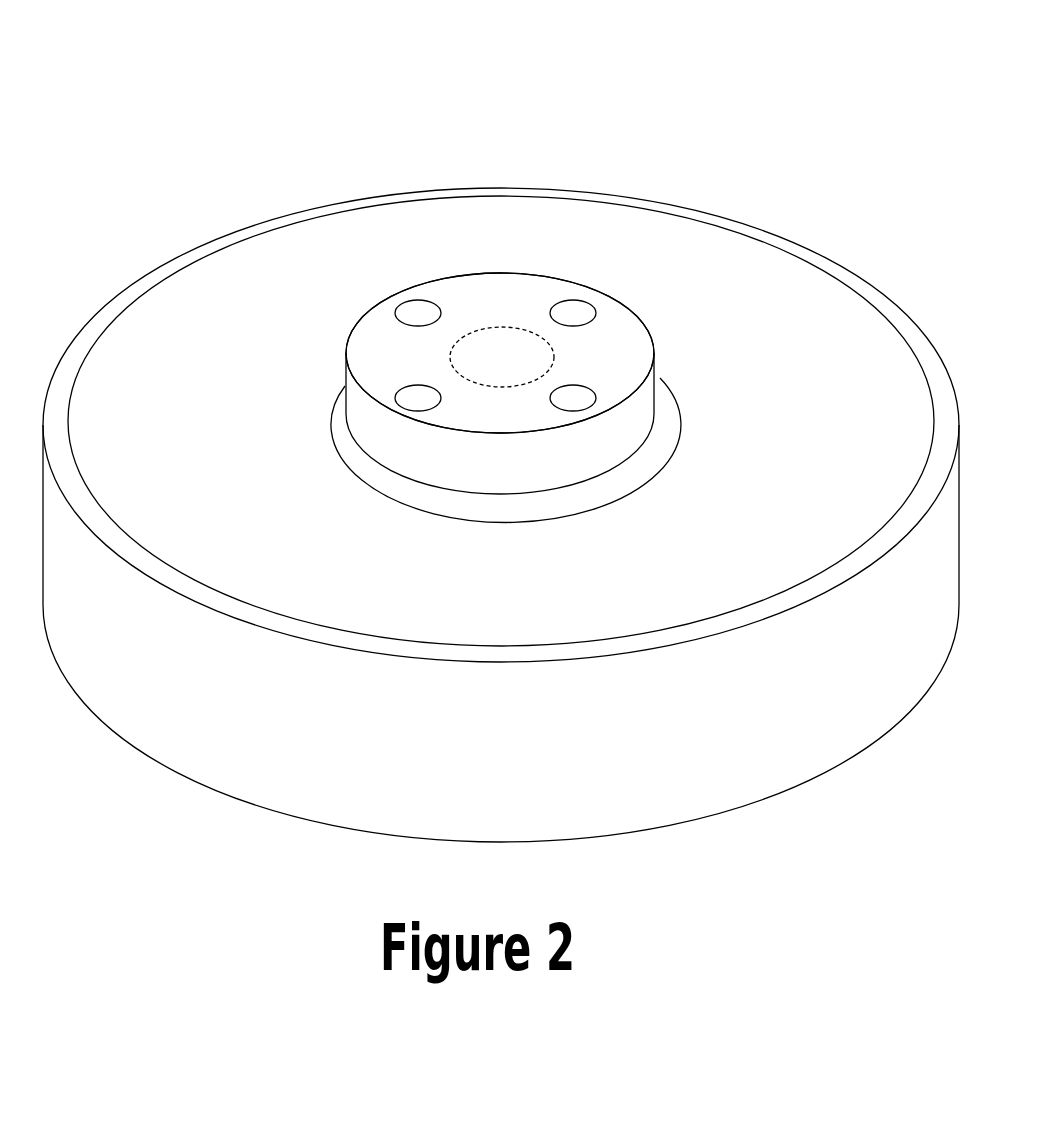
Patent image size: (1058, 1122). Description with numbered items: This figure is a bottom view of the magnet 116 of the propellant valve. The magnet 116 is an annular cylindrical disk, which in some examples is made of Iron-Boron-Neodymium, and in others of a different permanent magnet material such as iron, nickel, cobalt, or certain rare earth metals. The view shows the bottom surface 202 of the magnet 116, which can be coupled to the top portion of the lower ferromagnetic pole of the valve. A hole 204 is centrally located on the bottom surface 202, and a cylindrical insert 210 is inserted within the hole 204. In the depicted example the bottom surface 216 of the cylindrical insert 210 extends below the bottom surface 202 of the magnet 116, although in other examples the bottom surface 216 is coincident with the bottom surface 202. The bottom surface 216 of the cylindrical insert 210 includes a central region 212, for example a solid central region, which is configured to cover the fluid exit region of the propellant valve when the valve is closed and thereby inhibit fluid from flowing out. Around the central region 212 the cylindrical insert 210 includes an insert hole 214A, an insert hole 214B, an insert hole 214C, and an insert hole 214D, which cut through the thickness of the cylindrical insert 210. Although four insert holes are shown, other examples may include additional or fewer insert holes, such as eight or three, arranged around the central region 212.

The magnet 116 is at (238, 82).
The bottom surface of the magnet 202 is at (632, 241).
The hole 204 is at (401, 487).
The cylindrical insert 210 is at (369, 425).
The central region 212 is at (501, 350).
The insert hole 214A is at (411, 316).
The insert hole 214B is at (416, 394).
The insert hole 214C is at (575, 393).
The insert hole 214D is at (566, 308).
The bottom surface of the cylindrical insert 216 is at (623, 328).